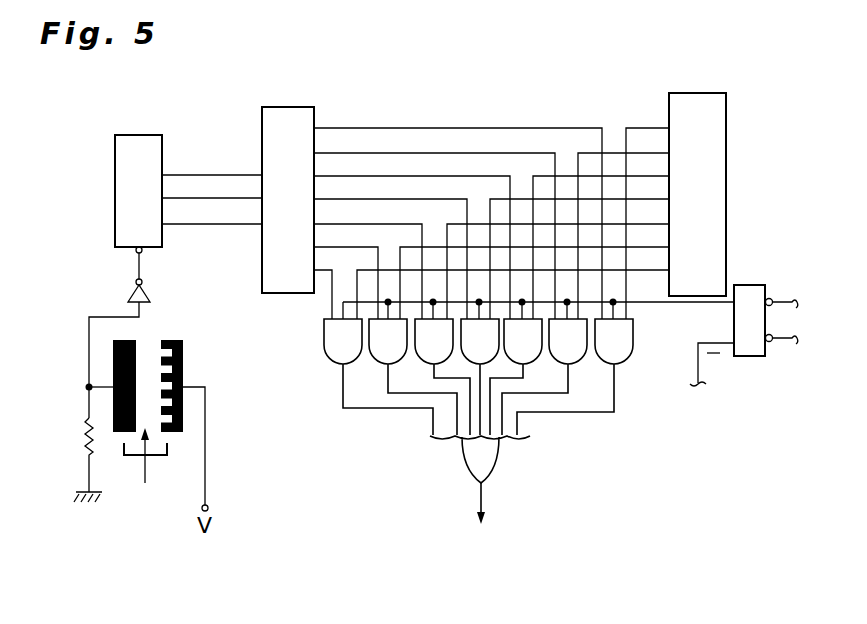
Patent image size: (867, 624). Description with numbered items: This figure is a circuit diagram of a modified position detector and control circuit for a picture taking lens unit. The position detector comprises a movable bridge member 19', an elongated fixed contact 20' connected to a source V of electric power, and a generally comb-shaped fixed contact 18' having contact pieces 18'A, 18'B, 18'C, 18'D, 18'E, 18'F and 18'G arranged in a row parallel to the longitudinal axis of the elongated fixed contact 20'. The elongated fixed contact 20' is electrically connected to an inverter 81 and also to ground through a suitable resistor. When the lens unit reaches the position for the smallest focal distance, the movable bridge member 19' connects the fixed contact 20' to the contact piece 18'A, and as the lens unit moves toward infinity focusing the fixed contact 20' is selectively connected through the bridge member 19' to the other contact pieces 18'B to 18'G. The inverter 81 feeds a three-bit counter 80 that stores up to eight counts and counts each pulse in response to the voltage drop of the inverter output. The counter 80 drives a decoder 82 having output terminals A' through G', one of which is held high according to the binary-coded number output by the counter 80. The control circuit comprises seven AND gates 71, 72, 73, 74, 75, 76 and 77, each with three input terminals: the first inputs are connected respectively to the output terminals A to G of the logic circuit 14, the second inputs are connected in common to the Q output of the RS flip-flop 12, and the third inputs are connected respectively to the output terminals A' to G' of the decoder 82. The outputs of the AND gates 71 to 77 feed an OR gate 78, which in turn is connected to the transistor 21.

The counter 80 is at (140, 136).
The decoder 82 is at (283, 108).
The logic circuit 14 is at (713, 101).
The inverter 81 is at (133, 294).
The elongated fixed contact 20' is at (84, 380).
The comb-shaped fixed contact 18' is at (233, 382).
The contact piece 18'A is at (228, 431).
The contact piece 18'B is at (234, 401).
The contact piece 18'C is at (234, 378).
The contact piece 18'D is at (229, 346).
The contact piece 18'E is at (223, 326).
The contact piece 18'F is at (220, 306).
The contact piece 18'G is at (192, 292).
The movable bridge member 19' is at (162, 470).
The AND gate 77 is at (335, 352).
The AND gate 76 is at (380, 352).
The AND gate 75 is at (426, 352).
The AND gate 74 is at (468, 355).
The AND gate 73 is at (528, 352).
The AND gate 72 is at (575, 352).
The AND gate 71 is at (622, 352).
The OR gate 78 is at (485, 458).
The transistor 21 is at (484, 523).
The RS flip-flop 12 is at (747, 357).